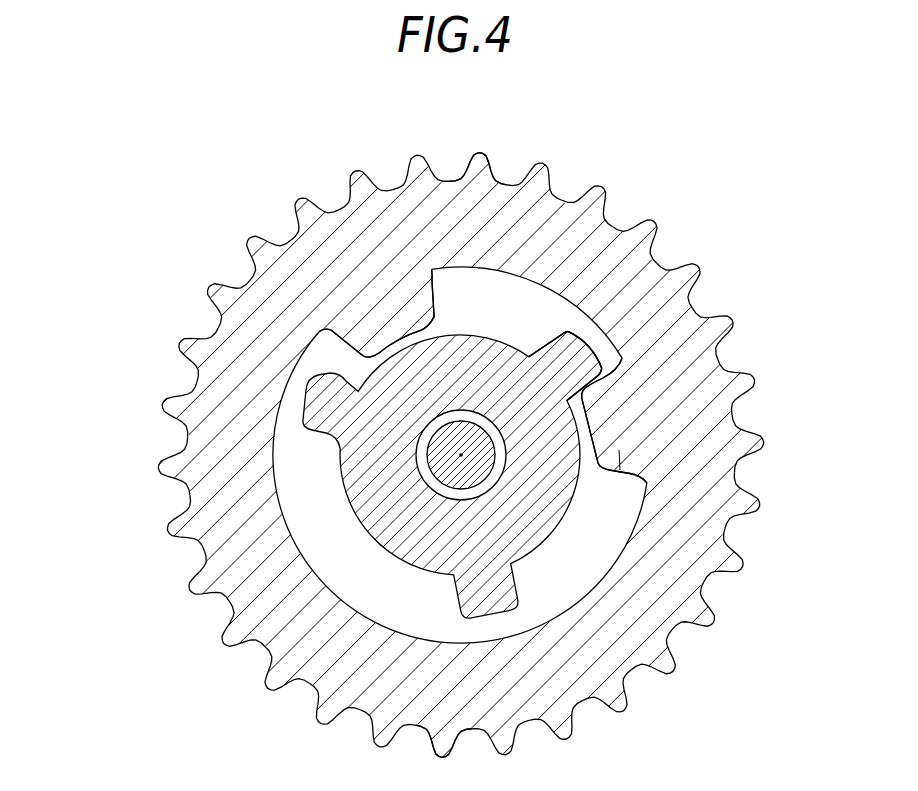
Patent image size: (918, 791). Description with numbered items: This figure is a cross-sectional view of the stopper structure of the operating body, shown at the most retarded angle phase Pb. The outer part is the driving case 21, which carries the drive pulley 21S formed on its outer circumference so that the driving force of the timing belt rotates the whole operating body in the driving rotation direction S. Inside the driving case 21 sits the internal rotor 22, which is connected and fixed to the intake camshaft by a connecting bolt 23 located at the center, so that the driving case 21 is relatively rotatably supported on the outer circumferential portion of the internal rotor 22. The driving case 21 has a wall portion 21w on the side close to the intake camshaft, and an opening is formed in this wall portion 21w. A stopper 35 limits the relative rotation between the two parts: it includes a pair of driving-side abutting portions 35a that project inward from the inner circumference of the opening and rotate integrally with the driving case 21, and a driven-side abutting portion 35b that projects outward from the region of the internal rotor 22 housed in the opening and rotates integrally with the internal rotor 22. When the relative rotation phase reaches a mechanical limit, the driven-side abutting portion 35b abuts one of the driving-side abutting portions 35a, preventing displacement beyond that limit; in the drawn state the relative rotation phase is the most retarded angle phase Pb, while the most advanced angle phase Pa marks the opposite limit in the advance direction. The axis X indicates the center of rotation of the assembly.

The driving case 21 is at (461, 455).
The drive pulley 21S is at (657, 223).
The wall portion 21w is at (700, 403).
The internal rotor 22 is at (425, 550).
The connecting bolt 23 is at (480, 490).
The stopper 35 is at (483, 376).
The driving-side abutting portions 35a is at (318, 337).
The driven-side abutting portion 35b is at (588, 372).
The most advanced angle phase Pa is at (461, 455).
The most retarded angle phase Pb is at (461, 455).
The driving rotation direction S is at (83, 213).
The rotation axis X is at (461, 455).